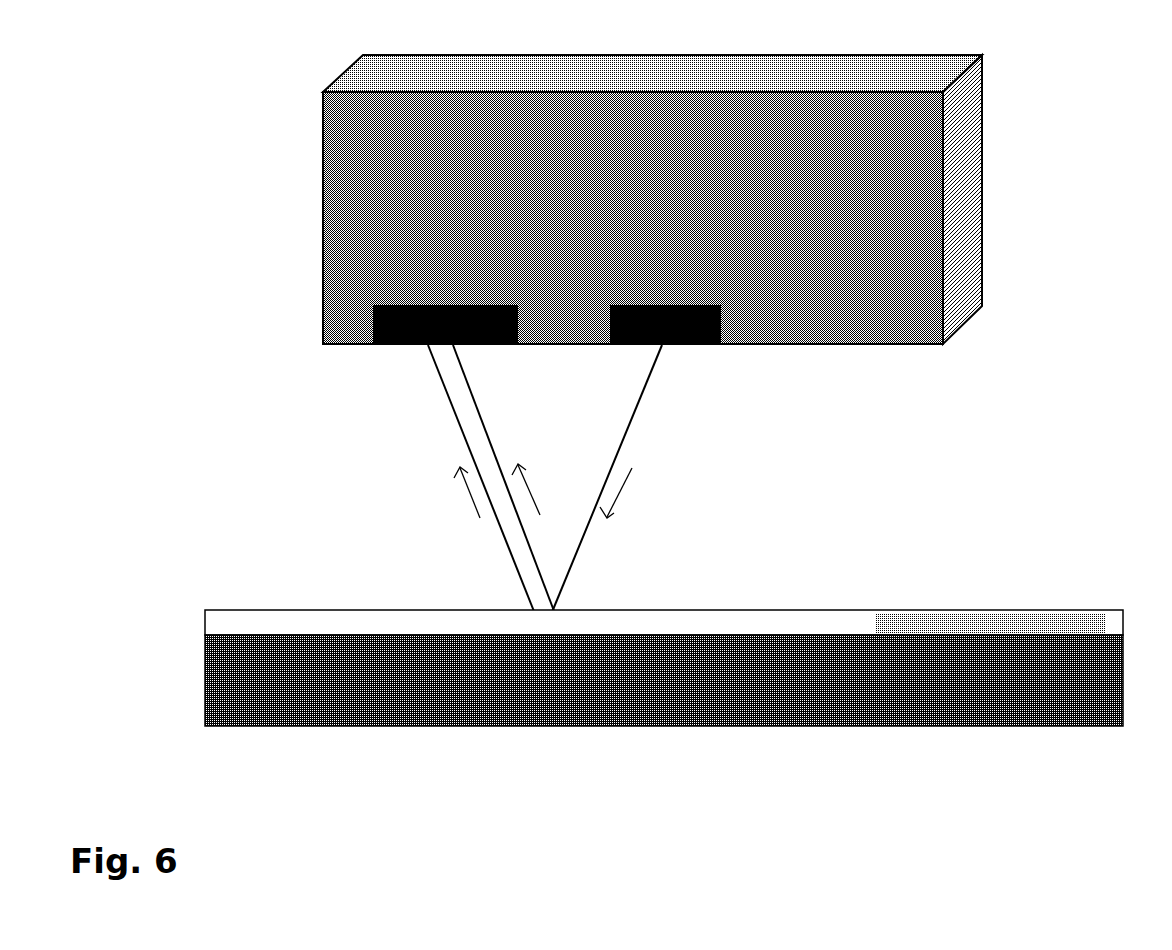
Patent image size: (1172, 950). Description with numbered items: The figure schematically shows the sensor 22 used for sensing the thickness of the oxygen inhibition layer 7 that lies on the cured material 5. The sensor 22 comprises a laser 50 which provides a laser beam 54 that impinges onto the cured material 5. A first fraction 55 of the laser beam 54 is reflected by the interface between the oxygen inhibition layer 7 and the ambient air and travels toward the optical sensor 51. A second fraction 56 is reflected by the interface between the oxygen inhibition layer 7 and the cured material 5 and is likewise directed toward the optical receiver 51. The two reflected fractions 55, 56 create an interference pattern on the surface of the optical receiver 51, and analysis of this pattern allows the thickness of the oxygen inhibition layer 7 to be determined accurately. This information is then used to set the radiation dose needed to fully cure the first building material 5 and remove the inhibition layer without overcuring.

The sensor 22 is at (842, 57).
The optical sensor 51 is at (505, 346).
The laser 50 is at (710, 346).
The laser beam 54 is at (628, 420).
The first fraction 55 is at (492, 437).
The second fraction 56 is at (461, 431).
The oxygen inhibition layer 7 is at (1108, 612).
The cured material 5 is at (1124, 665).